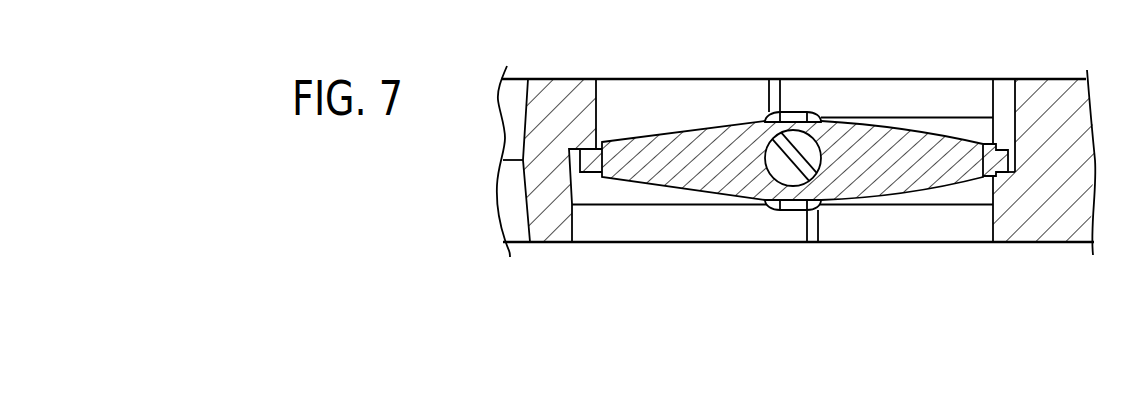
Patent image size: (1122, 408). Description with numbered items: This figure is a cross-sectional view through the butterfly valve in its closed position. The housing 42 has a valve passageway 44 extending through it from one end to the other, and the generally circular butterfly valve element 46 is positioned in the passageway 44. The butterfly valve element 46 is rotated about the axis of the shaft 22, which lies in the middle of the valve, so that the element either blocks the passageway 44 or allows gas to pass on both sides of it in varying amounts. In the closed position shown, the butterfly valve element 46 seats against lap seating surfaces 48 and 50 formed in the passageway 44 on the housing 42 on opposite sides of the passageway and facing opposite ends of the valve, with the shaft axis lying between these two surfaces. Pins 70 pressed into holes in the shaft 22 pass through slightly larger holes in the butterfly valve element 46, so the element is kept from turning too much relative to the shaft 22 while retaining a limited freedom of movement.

The shaft 22 is at (822, 165).
The housing 42 is at (1050, 80).
The valve passageway 44 is at (864, 97).
The butterfly valve element 46 is at (734, 143).
The lap seating surface 48 is at (571, 148).
The lap seating surface 50 is at (997, 143).
The pins 70 is at (796, 112).